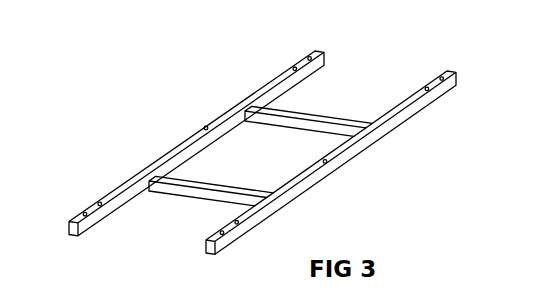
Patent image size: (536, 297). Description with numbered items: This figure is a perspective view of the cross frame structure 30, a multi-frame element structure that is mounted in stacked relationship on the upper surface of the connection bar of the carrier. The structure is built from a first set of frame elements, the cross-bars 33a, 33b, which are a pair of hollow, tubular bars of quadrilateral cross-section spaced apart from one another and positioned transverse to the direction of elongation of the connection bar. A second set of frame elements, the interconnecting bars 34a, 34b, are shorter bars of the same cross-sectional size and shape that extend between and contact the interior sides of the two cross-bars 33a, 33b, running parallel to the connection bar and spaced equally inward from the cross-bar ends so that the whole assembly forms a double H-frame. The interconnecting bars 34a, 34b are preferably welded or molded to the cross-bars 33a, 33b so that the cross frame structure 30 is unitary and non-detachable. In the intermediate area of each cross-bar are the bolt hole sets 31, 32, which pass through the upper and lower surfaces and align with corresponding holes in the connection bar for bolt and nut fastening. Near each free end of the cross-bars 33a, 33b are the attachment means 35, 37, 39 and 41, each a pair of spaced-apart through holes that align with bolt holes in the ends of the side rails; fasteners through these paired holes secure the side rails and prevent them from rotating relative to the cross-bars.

The cross frame structure 30 is at (269, 148).
The bolt hole set 31 is at (320, 157).
The bolt hole set 32 is at (197, 117).
The cross-bar 33a is at (166, 140).
The cross-bar 33b is at (298, 184).
The interconnecting bar 34a is at (210, 187).
The interconnecting bar 34b is at (350, 137).
The attachment means 35 is at (76, 204).
The attachment means 37 is at (287, 58).
The attachment means 39 is at (238, 228).
The attachment means 41 is at (449, 73).